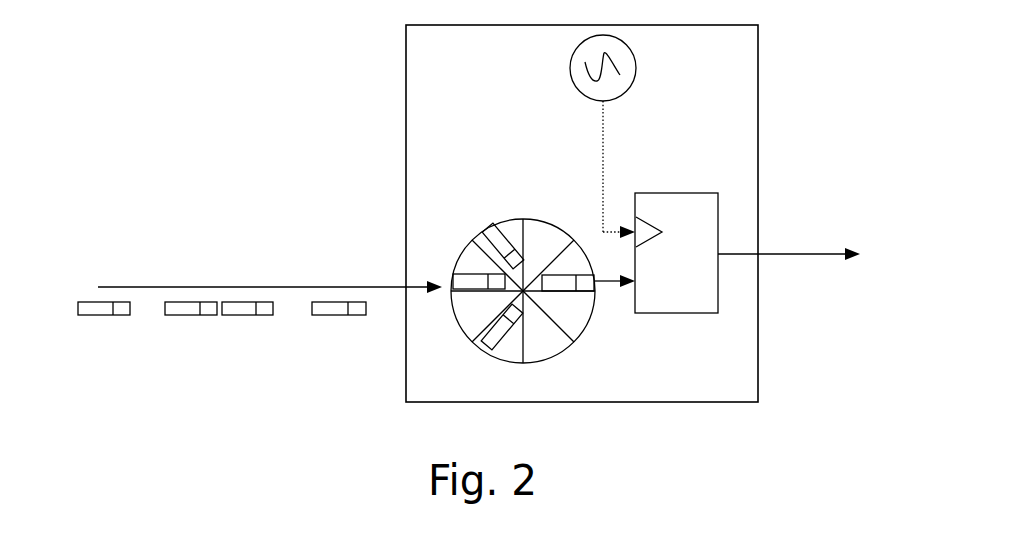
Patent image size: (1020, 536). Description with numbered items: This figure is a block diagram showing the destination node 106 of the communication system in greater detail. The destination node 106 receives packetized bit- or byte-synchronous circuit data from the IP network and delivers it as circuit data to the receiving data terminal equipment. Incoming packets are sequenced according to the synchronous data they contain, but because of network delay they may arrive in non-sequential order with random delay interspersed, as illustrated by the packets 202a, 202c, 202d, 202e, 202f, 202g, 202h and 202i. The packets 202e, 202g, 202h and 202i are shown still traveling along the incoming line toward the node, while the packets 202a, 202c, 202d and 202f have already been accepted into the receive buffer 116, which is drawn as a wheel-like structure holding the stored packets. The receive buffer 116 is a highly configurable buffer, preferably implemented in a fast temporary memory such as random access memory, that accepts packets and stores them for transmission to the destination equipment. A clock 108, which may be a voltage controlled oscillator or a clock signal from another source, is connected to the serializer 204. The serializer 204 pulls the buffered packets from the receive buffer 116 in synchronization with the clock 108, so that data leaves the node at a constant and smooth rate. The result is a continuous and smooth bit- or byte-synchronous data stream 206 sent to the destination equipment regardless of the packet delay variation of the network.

The destination node 106 is at (759, 90).
The clock 108 is at (636, 68).
The receive buffer 116 is at (518, 219).
The serializer 204 is at (676, 253).
The bit- or byte-synchronous data stream 206 is at (794, 254).
The packet 202a is at (565, 287).
The packet 202c is at (497, 231).
The packet 202d is at (462, 274).
The packet 202e is at (342, 316).
The packet 202f is at (497, 343).
The packet 202g is at (250, 316).
The packet 202h is at (105, 316).
The packet 202i is at (194, 316).